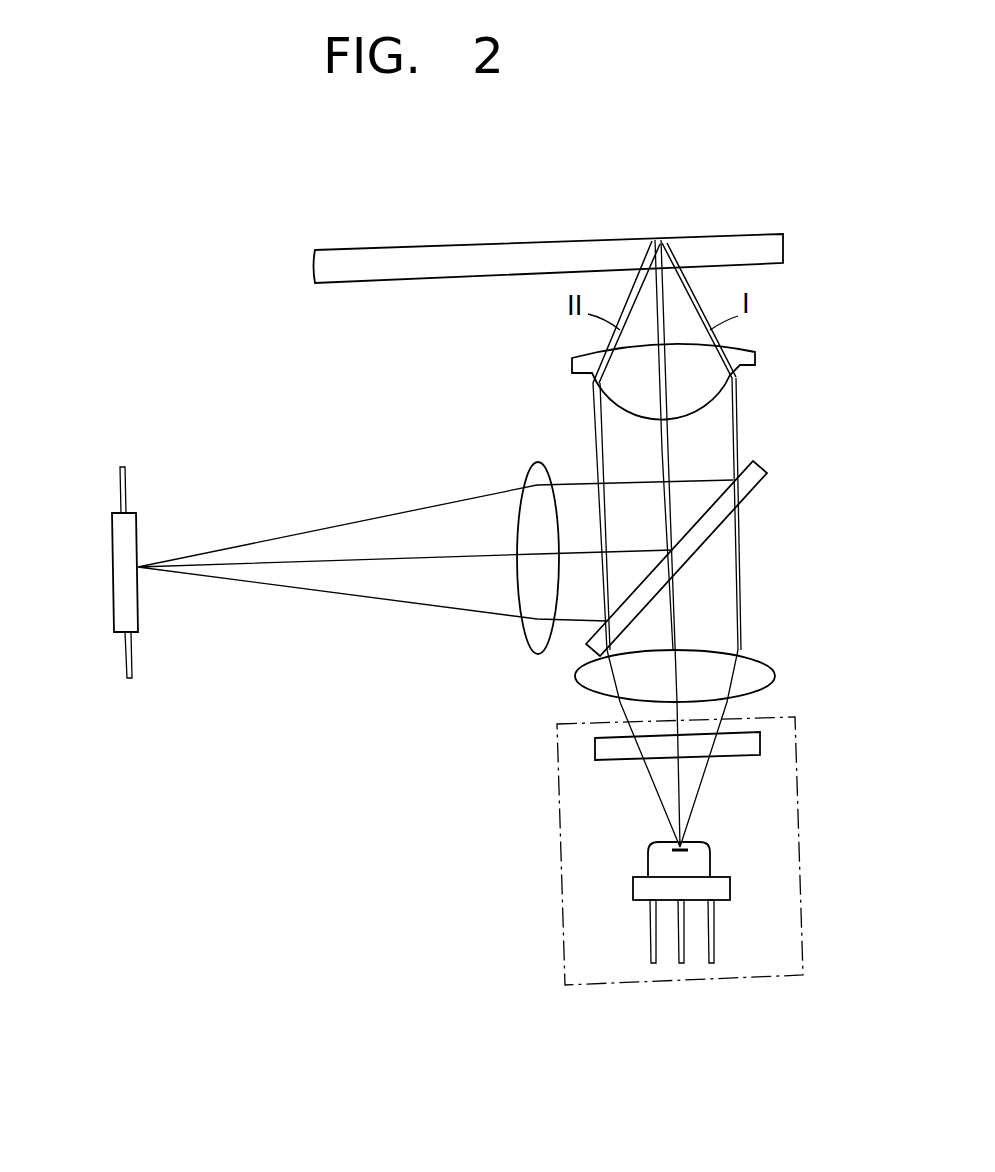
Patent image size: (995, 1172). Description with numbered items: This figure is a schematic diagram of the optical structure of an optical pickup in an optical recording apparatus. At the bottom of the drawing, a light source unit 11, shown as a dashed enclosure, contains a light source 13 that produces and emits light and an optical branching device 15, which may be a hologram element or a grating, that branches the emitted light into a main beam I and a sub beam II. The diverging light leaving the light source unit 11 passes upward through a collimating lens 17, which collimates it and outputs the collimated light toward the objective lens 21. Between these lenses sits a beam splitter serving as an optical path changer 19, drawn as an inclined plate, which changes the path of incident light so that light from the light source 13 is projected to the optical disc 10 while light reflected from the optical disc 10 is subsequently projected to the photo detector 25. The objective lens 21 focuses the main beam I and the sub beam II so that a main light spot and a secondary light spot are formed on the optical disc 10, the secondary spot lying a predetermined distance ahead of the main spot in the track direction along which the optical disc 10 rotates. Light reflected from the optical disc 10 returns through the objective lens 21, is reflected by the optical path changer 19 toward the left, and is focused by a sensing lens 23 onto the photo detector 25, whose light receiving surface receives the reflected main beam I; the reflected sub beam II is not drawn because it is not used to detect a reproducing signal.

The optical disc 10 is at (780, 242).
The light source unit 11 is at (557, 908).
The light source 13 is at (730, 887).
The optical branching device 15 is at (760, 742).
The collimating lens 17 is at (772, 672).
The optical path changer 19 is at (745, 492).
The objective lens 21 is at (755, 357).
The sensing lens 23 is at (537, 652).
The photo detector 25 is at (112, 526).